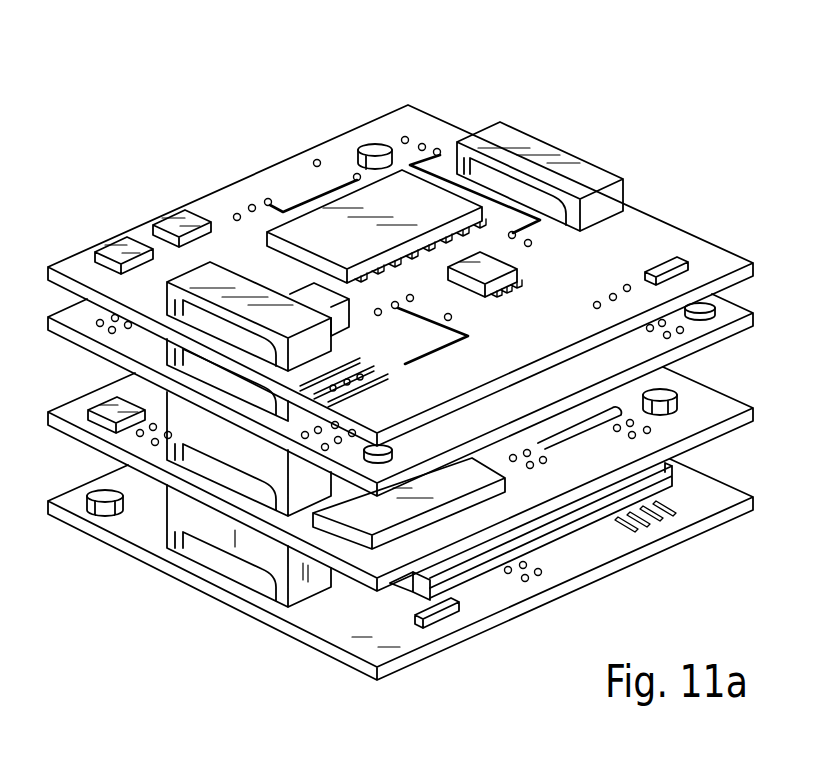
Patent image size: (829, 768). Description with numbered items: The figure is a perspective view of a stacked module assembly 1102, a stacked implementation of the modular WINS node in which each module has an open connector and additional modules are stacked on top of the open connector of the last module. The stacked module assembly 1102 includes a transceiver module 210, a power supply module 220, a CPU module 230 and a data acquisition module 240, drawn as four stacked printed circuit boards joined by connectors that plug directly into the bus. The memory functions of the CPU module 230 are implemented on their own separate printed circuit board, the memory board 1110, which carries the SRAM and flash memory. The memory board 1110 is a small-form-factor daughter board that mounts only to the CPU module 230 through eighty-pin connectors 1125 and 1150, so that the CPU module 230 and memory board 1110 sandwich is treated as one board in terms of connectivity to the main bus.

The stacked module assembly 1102 is at (135, 75).
The transceiver module 210 is at (720, 244).
The power supply module 220 is at (733, 311).
The CPU module 230 is at (713, 400).
The data acquisition module 240 is at (662, 545).
The memory board 1110 is at (667, 464).
The 80-pin connector 1125 is at (697, 486).
The 80-pin connector 1150 is at (407, 593).